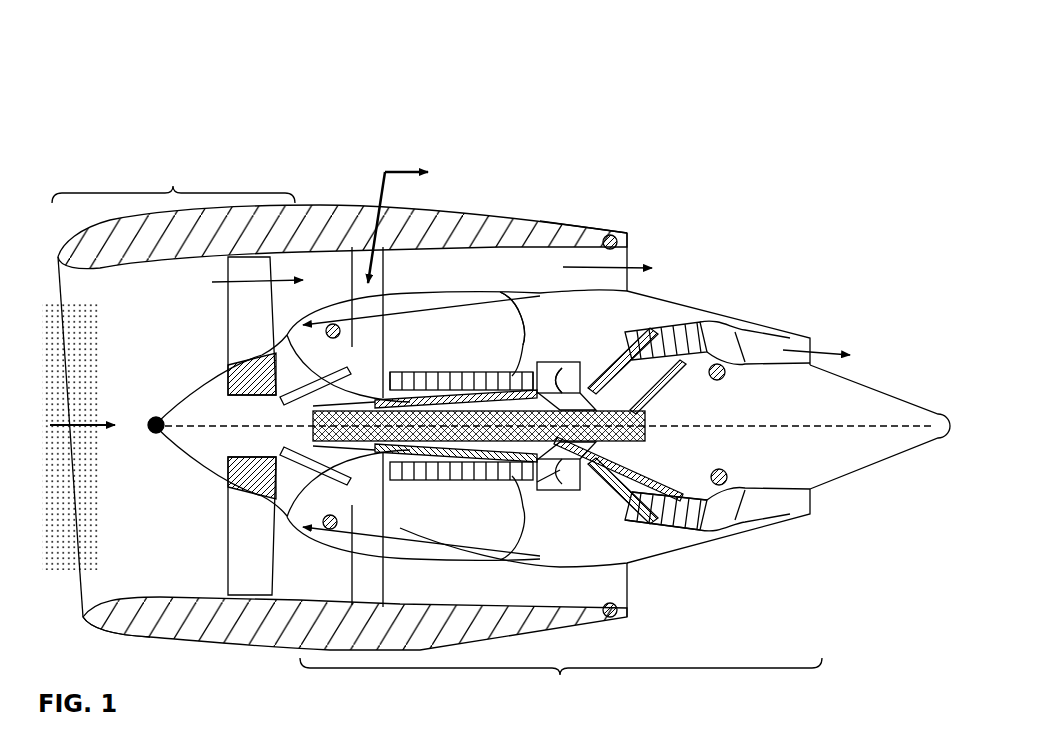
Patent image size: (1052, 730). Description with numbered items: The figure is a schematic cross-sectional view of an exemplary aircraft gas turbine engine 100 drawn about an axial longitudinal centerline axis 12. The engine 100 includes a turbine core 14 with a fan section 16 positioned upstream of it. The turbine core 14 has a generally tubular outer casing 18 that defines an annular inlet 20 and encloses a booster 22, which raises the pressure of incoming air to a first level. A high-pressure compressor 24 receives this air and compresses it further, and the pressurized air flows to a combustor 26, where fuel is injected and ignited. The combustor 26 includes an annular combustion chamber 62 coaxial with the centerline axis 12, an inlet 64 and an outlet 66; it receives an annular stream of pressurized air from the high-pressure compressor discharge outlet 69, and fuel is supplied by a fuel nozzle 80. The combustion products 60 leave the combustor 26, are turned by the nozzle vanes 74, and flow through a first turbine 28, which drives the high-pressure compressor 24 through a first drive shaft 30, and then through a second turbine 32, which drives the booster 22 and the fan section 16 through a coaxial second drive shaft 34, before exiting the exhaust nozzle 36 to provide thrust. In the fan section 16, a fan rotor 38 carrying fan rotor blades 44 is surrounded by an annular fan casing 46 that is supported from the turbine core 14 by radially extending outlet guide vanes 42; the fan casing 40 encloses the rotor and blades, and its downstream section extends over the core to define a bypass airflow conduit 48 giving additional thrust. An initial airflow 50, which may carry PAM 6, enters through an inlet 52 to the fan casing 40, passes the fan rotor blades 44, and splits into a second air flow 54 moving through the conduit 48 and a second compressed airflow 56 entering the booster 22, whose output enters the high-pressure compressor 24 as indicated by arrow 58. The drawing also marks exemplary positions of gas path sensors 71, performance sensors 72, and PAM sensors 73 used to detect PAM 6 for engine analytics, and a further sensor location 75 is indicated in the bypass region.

The gas turbine engine 100 is at (351, 326).
The PAM 6 is at (160, 436).
The axial longitudinal centerline axis 12 is at (748, 424).
The turbine core 14 is at (561, 681).
The fan section 16 is at (173, 177).
The outer casing 18 is at (517, 552).
The annular inlet 20 is at (328, 522).
The booster 22 is at (330, 460).
The high-pressure compressor 24 is at (456, 451).
The combustor 26 is at (518, 453).
The first turbine 28 is at (652, 480).
The first drive shaft 30 is at (582, 398).
The second turbine 32 is at (766, 620).
The second drive shaft 34 is at (312, 408).
The exhaust nozzle 36 is at (816, 342).
The fan rotor 38 is at (260, 405).
The fan casing 40 is at (272, 650).
The outlet guide vanes 42 is at (402, 288).
The fan rotor blades 44 is at (226, 558).
The annular fan casing 46 is at (545, 226).
The bypass airflow conduit 48 is at (487, 263).
The initial airflow 50 is at (78, 422).
The inlet 52 is at (83, 595).
The second air flow 54 is at (235, 282).
The second compressed airflow 56 is at (297, 318).
The arrow 58 is at (397, 370).
The combustion products 60 is at (602, 352).
The annular combustion chamber 62 is at (568, 519).
The inlet 64 is at (512, 370).
The outlet 66 is at (560, 364).
The high-pressure compressor discharge outlet 69 is at (505, 488).
The gas-path sensors 71 is at (734, 477).
The performance sensors 72 is at (146, 482).
The PAM sensors 73 is at (461, 223).
The nozzle vanes 74 is at (580, 468).
The bypass duct sensor 75 is at (611, 582).
The fuel nozzle 80 is at (512, 350).